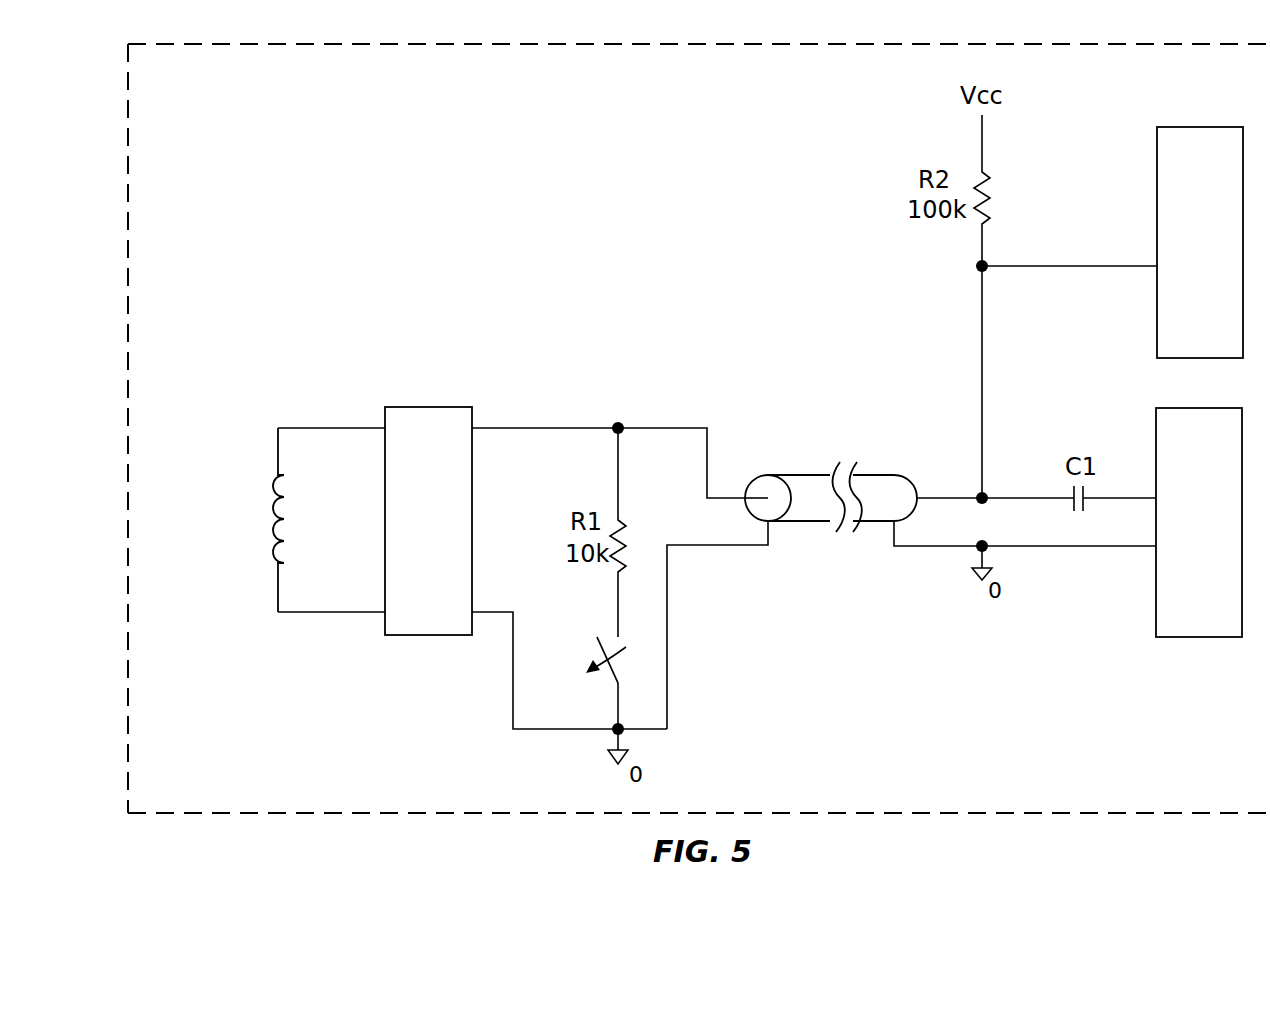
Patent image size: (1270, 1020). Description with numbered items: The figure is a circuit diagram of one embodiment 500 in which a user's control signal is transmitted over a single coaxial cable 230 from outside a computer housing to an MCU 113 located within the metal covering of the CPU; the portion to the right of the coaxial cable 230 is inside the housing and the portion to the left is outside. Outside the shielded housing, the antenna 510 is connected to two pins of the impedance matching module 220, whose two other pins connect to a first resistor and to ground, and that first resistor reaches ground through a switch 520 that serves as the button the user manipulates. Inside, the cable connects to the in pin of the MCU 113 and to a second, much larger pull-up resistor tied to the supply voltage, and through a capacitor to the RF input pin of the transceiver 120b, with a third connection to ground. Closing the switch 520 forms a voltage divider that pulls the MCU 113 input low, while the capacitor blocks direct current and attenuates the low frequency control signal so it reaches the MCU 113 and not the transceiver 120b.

The embodiment 500 is at (852, 38).
The antenna 510 is at (281, 514).
The impedance matching module 220 is at (428, 635).
The coaxial cable 230 is at (813, 474).
The switch 520 is at (610, 637).
The MCU 113 is at (1222, 182).
The transceiver 120b is at (1210, 637).